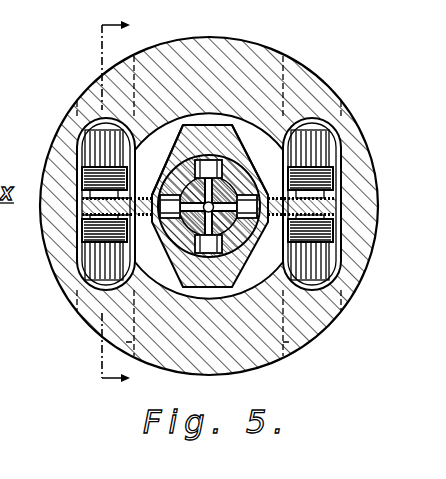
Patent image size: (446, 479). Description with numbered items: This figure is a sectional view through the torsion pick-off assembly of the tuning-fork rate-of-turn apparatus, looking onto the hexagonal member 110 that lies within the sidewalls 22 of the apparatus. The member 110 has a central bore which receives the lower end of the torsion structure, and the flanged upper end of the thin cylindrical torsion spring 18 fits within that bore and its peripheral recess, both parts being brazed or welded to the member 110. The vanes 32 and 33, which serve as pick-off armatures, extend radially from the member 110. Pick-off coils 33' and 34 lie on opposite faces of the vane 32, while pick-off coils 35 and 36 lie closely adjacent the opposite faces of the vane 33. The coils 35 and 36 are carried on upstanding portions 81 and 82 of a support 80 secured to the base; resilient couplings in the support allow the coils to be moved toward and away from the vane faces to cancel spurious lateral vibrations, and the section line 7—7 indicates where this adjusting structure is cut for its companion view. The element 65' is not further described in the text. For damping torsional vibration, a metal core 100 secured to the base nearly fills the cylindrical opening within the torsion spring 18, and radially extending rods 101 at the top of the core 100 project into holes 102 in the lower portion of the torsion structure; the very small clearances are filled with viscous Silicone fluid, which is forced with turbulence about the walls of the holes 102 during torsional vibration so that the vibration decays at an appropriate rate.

The section line 7- 7 is at (122, 205).
The sidewalls 22 is at (261, 55).
The support 80 is at (102, 279).
The upstanding portion 81 is at (93, 137).
The pick-off coil 35 is at (84, 173).
The stem 65' is at (61, 175).
The vane 33 is at (66, 214).
The pick-off coil 36 is at (82, 233).
The upstanding portion 82 is at (88, 262).
The pick-off coil 33' is at (343, 160).
The vane 32 is at (203, 209).
The pick-off coil 34 is at (334, 231).
The hexagonal member 110 is at (183, 270).
The holes 102 is at (168, 160).
The radially extending rods 101 is at (239, 163).
The metal core 100 is at (255, 246).
The cylindrical torsion spring 18 is at (163, 243).